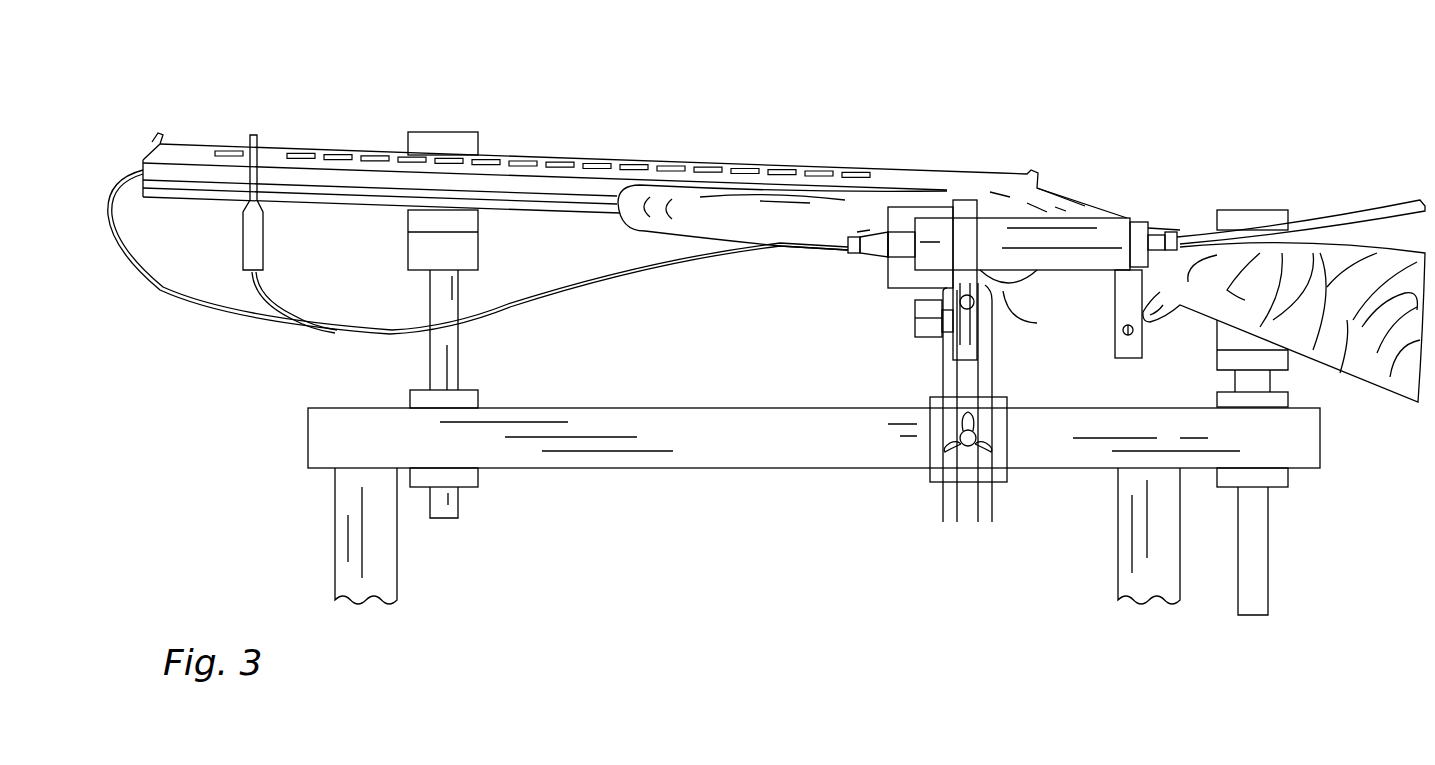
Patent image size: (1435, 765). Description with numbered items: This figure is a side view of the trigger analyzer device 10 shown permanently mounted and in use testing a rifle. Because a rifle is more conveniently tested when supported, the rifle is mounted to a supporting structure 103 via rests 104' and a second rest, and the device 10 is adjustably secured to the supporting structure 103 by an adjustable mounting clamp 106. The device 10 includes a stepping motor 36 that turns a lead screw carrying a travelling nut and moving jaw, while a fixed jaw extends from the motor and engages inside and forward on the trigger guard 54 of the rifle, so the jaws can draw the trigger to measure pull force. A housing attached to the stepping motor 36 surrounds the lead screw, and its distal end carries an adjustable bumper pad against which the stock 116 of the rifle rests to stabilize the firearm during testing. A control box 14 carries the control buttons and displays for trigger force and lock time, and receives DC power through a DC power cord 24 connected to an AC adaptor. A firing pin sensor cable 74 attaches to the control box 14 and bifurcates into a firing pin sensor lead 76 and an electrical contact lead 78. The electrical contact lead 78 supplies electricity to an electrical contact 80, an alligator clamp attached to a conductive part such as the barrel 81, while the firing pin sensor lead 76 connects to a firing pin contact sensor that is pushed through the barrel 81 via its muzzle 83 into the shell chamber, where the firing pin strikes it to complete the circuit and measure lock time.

The trigger analyzer device 10 is at (865, 332).
The control box 14 is at (1073, 220).
The DC power cord 24 is at (1392, 203).
The stepping motor 36 is at (887, 276).
The trigger guard 54 is at (1005, 293).
The firing pin sensor cable 74 is at (620, 293).
The firing pin sensor lead 76 is at (190, 300).
The electrical contact lead 78 is at (285, 307).
The electrical contact 80 is at (256, 135).
The barrel 81 is at (186, 170).
The muzzle 83 is at (143, 171).
The supporting structure 103 is at (607, 460).
The rest 104' is at (482, 282).
The adjustable mounting clamp 106 is at (993, 350).
The stock 116 is at (1338, 335).